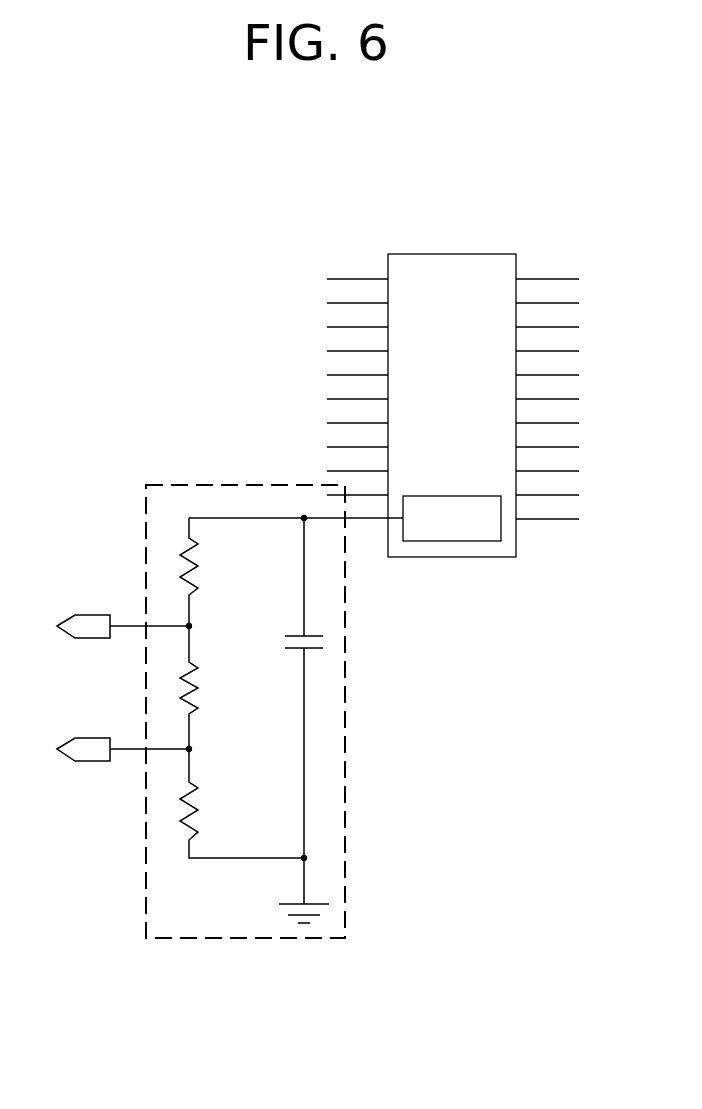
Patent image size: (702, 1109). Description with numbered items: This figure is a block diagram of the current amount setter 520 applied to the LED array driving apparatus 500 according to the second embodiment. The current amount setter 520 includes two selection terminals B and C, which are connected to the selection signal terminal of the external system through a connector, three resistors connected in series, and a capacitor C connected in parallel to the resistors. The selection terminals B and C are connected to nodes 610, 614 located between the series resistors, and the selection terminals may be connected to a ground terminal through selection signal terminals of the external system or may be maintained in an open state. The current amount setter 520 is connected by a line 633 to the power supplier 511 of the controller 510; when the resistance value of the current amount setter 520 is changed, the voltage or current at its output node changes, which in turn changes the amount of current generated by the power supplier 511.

The LED array driving apparatus 500 is at (191, 245).
The controller 510 is at (433, 390).
The power supplier 511 is at (433, 528).
The current amount setter 520 is at (258, 484).
The node 610 is at (189, 626).
The node 614 is at (189, 749).
The connection line to integrated circuit 633 is at (345, 518).